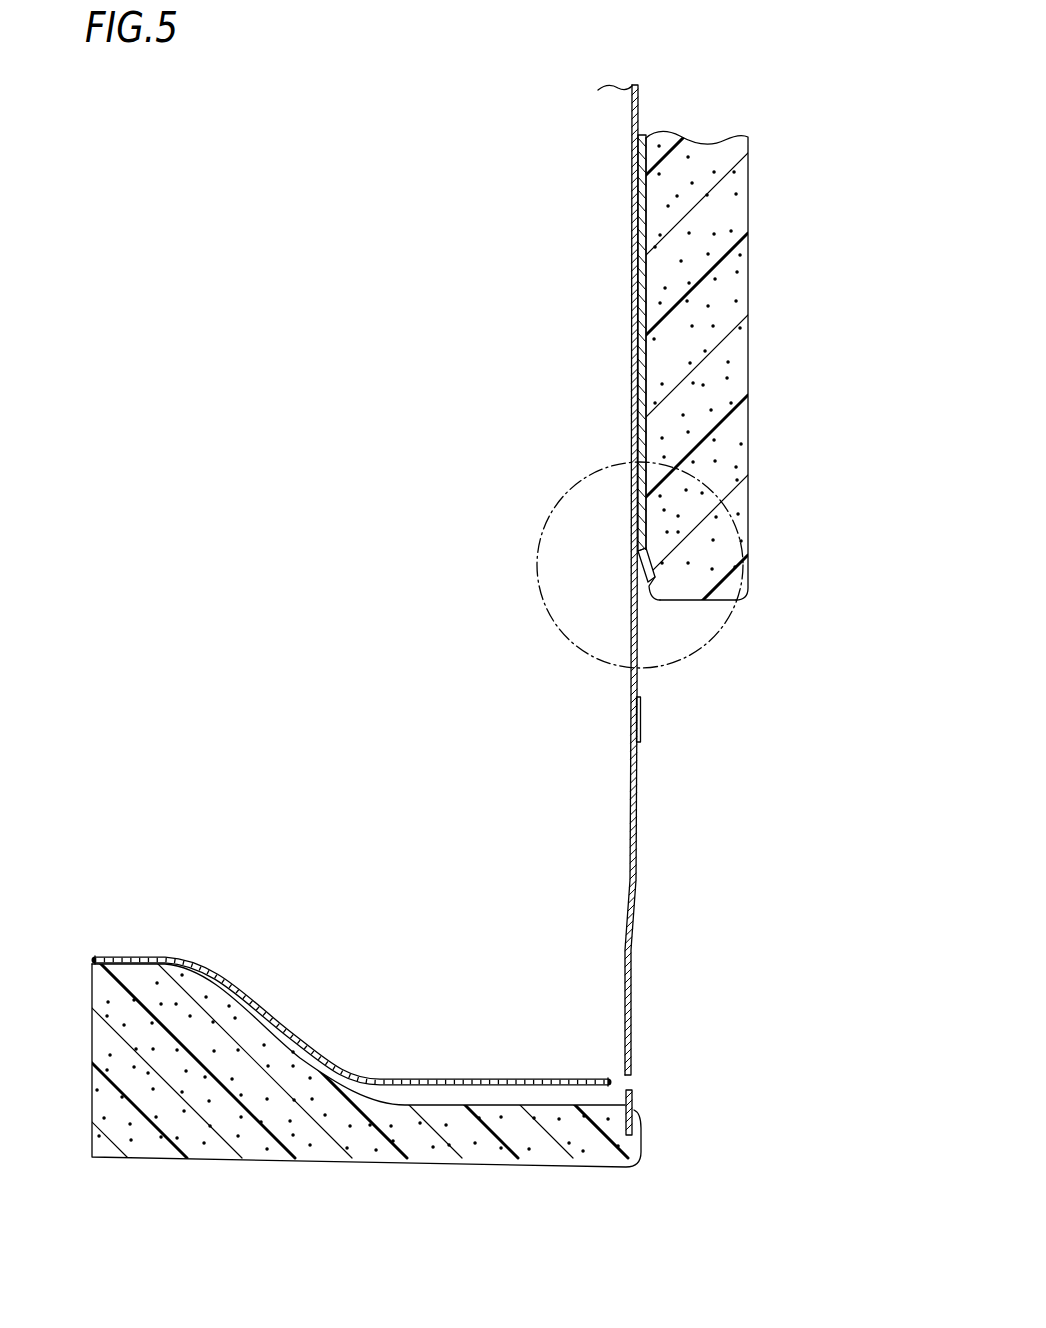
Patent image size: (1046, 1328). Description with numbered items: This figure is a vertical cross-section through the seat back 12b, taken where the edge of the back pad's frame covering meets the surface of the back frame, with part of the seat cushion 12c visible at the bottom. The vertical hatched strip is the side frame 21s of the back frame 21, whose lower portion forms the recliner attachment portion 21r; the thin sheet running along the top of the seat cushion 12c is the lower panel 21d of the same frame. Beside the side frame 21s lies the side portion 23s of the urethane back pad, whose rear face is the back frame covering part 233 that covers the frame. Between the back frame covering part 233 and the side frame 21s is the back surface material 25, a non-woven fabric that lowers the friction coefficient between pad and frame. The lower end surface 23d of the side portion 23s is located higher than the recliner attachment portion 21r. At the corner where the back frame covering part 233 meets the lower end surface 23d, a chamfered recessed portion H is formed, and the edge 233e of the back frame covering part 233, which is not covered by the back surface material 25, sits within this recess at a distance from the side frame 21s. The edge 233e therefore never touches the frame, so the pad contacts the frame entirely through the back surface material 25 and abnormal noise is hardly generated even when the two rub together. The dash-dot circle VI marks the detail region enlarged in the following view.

The seat back 12b is at (766, 157).
The seat cushion 12c is at (135, 952).
The back frame 21 is at (627, 562).
The recliner attachment portion 21r is at (636, 834).
The side frame 21s is at (632, 603).
The lower panel 21d is at (345, 1076).
The side portion 23s is at (707, 251).
The lower end surface 23d is at (695, 601).
The back surface material 25 is at (640, 160).
The back frame covering part 233 is at (646, 288).
The edge of the back frame covering part 233e is at (650, 598).
The recessed portion H is at (648, 577).
The detail region shown in FIG. 6 VI is at (704, 651).